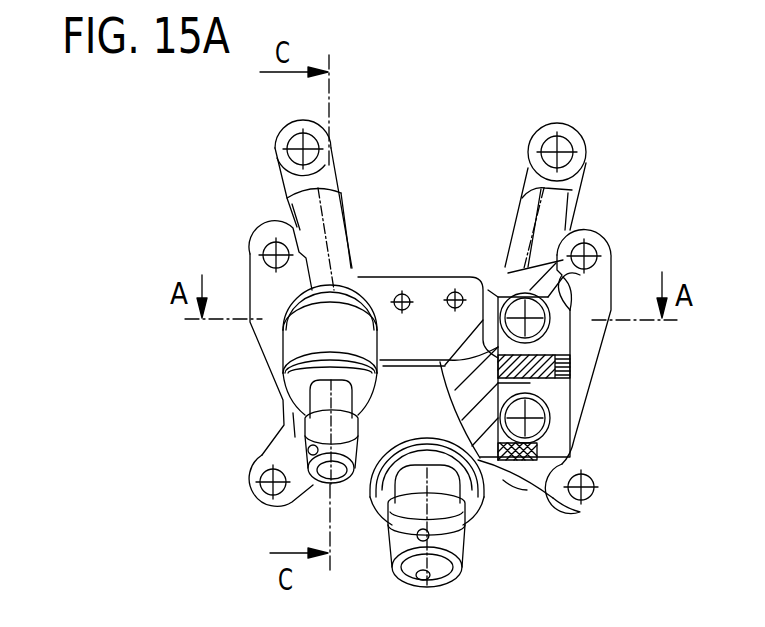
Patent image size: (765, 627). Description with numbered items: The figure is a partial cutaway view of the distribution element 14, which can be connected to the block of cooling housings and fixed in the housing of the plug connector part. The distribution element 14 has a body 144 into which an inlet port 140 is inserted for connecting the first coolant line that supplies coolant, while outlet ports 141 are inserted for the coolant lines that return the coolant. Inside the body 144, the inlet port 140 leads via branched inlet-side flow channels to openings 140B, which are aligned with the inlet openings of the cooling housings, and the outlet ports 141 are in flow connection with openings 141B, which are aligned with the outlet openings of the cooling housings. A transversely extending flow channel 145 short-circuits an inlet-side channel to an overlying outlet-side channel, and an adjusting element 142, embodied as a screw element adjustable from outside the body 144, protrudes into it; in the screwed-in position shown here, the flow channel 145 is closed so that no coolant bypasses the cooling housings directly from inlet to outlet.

The distribution element 14 is at (443, 317).
The inlet port 140 is at (467, 553).
The outlet port 141 is at (323, 474).
The opening 140B is at (545, 433).
The opening 141B is at (533, 328).
The adjusting element 142 is at (565, 368).
The body 144 is at (264, 340).
The flow channel 145 is at (512, 387).